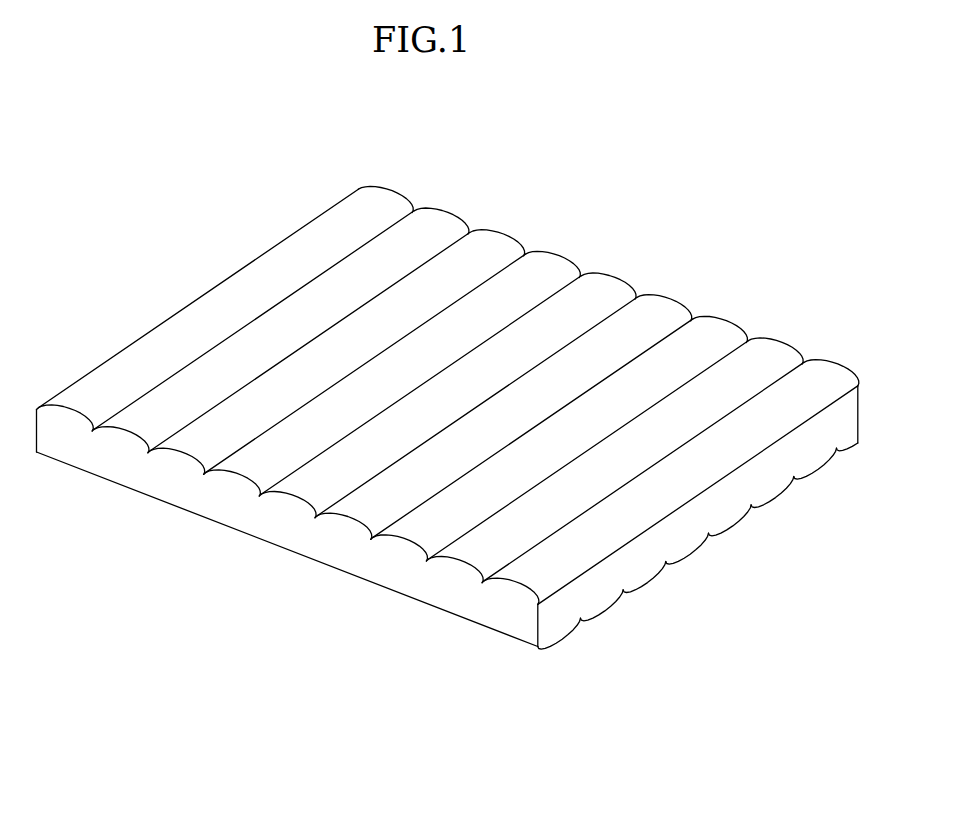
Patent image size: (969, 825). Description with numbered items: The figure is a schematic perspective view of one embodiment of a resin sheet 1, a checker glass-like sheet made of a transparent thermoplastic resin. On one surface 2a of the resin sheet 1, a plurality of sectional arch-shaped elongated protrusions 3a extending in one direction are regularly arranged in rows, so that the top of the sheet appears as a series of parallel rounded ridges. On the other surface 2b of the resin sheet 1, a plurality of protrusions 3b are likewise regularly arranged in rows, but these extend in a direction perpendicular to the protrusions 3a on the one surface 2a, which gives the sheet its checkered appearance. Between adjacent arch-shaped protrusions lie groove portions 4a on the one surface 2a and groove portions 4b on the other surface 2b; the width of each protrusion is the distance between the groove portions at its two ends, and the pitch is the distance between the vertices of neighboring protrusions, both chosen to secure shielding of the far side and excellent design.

The resin sheet 1 is at (728, 303).
The one surface 2a is at (640, 520).
The other surface 2b is at (557, 643).
The protrusion 3a is at (685, 463).
The protrusion 3b is at (643, 587).
The groove portion 4a is at (482, 583).
The groove portion 4b is at (579, 616).